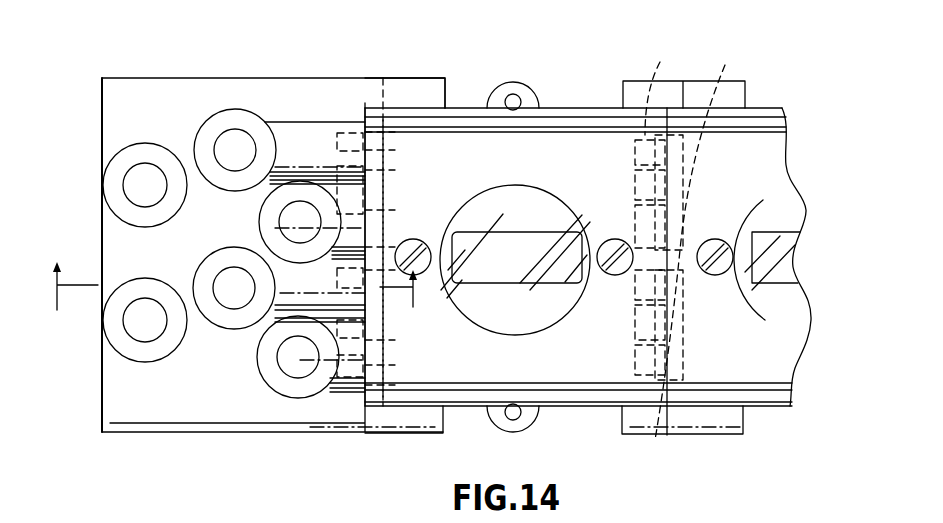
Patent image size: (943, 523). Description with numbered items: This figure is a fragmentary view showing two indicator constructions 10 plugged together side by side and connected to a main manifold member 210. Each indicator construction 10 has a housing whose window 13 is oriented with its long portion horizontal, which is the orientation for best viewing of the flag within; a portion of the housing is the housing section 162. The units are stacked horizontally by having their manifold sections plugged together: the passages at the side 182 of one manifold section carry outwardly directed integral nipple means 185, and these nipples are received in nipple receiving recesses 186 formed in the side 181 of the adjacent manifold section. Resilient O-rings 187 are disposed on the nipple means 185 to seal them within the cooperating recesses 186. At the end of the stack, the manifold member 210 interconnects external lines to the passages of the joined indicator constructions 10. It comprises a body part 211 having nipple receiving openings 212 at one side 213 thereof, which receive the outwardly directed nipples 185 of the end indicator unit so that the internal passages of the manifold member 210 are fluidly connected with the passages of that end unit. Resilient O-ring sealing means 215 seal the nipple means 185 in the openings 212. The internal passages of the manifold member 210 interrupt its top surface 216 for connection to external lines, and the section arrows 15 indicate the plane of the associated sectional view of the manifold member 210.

The indicator construction 10 is at (575, 108).
The window 13 is at (520, 232).
The section line 15 is at (239, 286).
The housing section 162 is at (470, 108).
The side of manifold section 181 is at (698, 241).
The side of manifold section 182 is at (380, 412).
The nipple means 185 is at (330, 152).
The nipple receiving recesses 186 is at (598, 432).
The O-rings 187 is at (690, 193).
The manifold member 210 is at (215, 408).
The body part 211 is at (113, 380).
The nipple receiving openings 212 is at (352, 135).
The side of manifold member 213 is at (385, 95).
The O-ring sealing means 215 is at (385, 148).
The top surface 216 is at (208, 118).